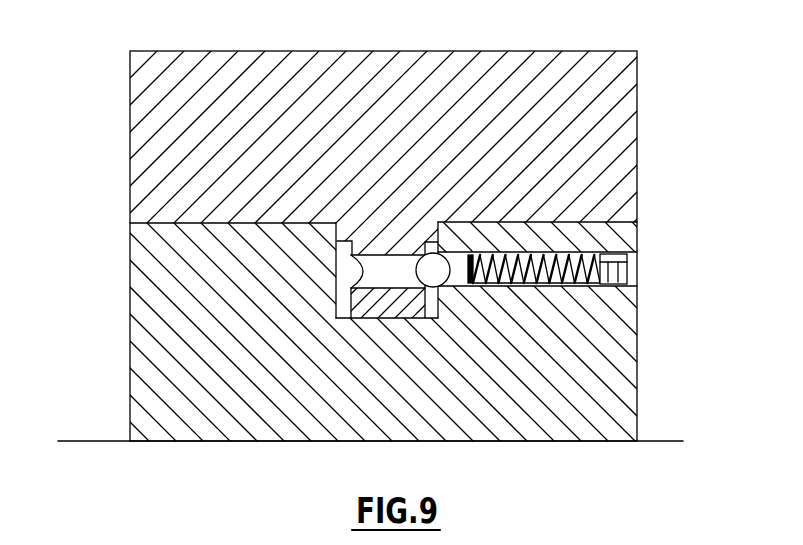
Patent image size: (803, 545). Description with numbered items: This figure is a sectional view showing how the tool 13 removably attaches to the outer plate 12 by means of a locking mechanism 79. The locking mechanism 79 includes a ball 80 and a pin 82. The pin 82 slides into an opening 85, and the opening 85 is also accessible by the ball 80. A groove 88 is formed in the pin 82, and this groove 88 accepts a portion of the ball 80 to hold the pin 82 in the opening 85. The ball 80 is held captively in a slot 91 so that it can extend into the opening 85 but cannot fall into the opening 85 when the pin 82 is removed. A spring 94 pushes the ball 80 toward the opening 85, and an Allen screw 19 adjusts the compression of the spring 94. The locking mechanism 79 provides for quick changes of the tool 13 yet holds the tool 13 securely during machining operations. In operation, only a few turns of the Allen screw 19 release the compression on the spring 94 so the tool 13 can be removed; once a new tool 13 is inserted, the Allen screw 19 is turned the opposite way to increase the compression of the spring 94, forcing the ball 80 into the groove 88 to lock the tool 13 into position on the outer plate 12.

The tool 13 is at (147, 133).
The outer plate 12 is at (147, 331).
The opening 85 is at (337, 253).
The groove 88 is at (420, 268).
The pin 82 is at (362, 317).
The locking mechanism 79 is at (397, 338).
The ball 80 is at (444, 287).
The slot 91 is at (537, 253).
The spring 94 is at (537, 287).
The Allen screw 19 is at (637, 270).